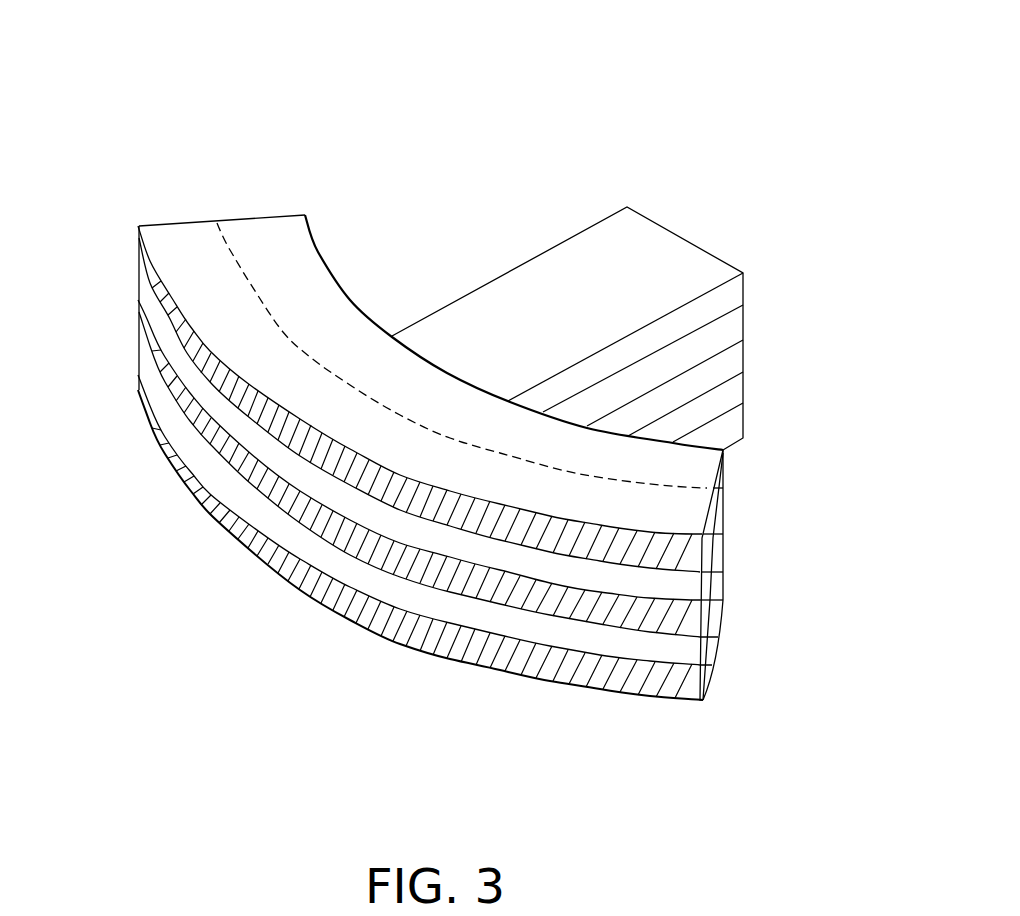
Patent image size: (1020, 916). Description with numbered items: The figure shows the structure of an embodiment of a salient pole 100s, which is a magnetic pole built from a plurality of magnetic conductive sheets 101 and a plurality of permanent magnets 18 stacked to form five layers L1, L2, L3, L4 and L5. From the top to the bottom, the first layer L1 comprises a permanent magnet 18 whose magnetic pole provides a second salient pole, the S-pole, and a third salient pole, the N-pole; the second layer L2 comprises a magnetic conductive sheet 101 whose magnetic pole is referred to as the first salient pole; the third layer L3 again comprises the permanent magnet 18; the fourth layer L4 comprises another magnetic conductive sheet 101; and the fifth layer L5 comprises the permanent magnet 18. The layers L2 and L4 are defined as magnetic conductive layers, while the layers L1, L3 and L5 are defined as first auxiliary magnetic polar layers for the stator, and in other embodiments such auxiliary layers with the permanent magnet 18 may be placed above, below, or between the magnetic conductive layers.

The salient pole 100s is at (130, 46).
The permanent magnet 18 is at (139, 250).
The magnetic conductive sheet 101 is at (278, 520).
The first layer L1 is at (737, 467).
The second layer L2 is at (736, 502).
The third layer L3 is at (734, 539).
The fourth layer L4 is at (736, 567).
The fifth layer L5 is at (737, 599).